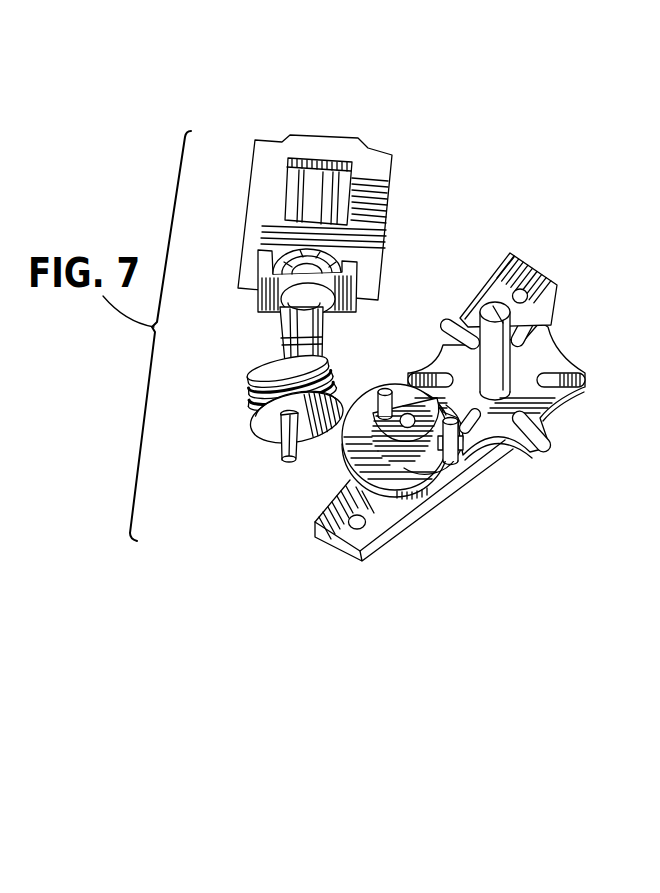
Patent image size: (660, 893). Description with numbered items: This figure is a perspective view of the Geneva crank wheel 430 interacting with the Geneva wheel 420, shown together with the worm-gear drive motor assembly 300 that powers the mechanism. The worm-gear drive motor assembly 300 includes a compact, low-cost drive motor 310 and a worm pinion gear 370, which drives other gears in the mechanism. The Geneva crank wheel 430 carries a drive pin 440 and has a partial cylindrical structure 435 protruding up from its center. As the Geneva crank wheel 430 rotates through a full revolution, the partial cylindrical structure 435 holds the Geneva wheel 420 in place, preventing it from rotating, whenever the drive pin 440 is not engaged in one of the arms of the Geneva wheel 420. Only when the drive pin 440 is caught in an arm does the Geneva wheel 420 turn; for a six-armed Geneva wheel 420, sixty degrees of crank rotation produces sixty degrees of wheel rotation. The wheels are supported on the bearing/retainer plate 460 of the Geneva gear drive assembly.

The worm-gear drive motor assembly 300 is at (374, 140).
The drive motor 310 is at (385, 177).
The worm pinion gear 370 is at (250, 379).
The Geneva wheel 420 is at (538, 364).
The Geneva crank wheel 430 is at (343, 457).
The partial cylindrical structure 435 is at (391, 388).
The drive pin 440 is at (459, 466).
The bearing/retainer plate 460 is at (387, 521).